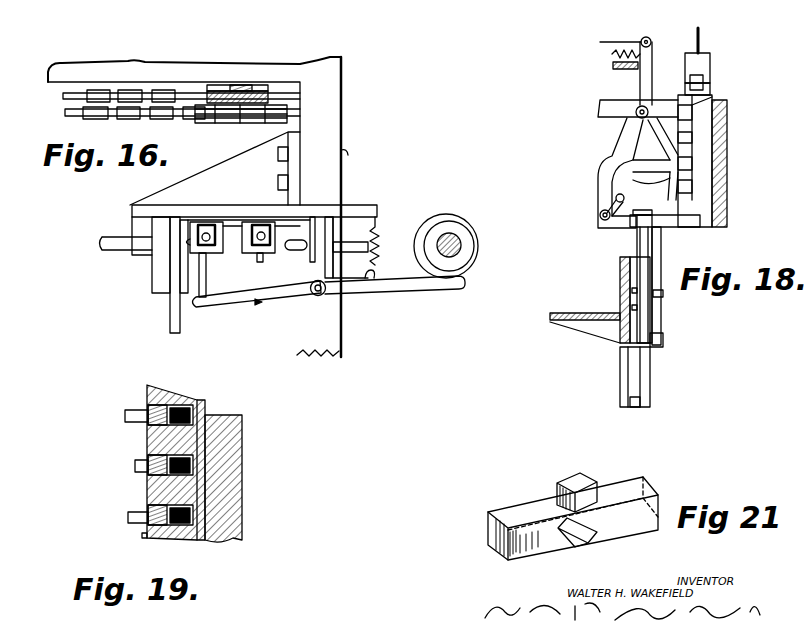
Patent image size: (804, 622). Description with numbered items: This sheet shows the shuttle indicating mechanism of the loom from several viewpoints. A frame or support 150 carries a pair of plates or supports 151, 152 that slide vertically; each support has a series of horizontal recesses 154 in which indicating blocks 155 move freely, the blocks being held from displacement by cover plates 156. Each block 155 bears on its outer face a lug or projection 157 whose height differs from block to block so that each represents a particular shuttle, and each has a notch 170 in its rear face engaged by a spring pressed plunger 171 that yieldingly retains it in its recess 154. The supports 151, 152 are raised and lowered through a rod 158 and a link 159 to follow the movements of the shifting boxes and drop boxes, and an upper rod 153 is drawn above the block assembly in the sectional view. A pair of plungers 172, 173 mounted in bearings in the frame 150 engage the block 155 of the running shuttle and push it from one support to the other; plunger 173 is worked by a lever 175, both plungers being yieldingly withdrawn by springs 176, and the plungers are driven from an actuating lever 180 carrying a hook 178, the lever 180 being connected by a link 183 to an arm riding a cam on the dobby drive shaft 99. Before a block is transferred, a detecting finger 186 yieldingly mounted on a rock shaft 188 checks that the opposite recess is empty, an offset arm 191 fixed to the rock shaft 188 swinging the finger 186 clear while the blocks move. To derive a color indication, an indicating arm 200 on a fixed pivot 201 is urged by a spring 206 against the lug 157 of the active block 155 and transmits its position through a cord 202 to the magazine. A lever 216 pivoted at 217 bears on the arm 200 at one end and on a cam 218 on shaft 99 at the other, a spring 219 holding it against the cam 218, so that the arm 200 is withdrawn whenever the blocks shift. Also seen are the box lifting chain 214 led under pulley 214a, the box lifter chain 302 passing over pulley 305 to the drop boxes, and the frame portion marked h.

In FIG. 16, the dobby drive shaft 99 is at (460, 255).
In FIG. 16, the frame 150 is at (254, 211).
In FIG. 18, the frame 150 is at (727, 112).
In FIG. 19, the frame 150 is at (237, 432).
In FIG. 16, the support 151 is at (267, 222).
In FIG. 18, the support 151 is at (703, 137).
In FIG. 19, the support 151 is at (207, 400).
In FIG. 16, the support 152 is at (220, 218).
In FIG. 18, the rod 153 is at (702, 40).
In FIG. 18, the horizontal recess 154 is at (694, 107).
In FIG. 19, the horizontal recess 154 is at (166, 402).
In FIG. 16, the indicating block 155 is at (225, 253).
In FIG. 18, the indicating block 155 is at (692, 163).
In FIG. 19, the indicating block 155 is at (147, 405).
In FIG. 21, the indicating block 155 is at (488, 513).
In FIG. 18, the cover plate 156 is at (678, 98).
In FIG. 19, the cover plate 156 is at (147, 485).
In FIG. 16, the lug 157 is at (262, 262).
In FIG. 19, the lug 157 is at (138, 463).
In FIG. 21, the lug 157 is at (578, 477).
In FIG. 16, the rod 158 is at (262, 222).
In FIG. 16, the link 159 is at (202, 222).
In FIG. 21, the notch 170 is at (580, 540).
In FIG. 19, the spring pressed plunger 171 is at (185, 400).
In FIG. 16, the plunger 172 is at (348, 250).
In FIG. 16, the plunger 173 is at (112, 237).
In FIG. 18, the lever 175 is at (662, 238).
In FIG. 18, the spring 176 is at (641, 404).
In FIG. 18, the hook 178 is at (632, 300).
In FIG. 18, the actuating lever 180 is at (636, 246).
In FIG. 18, the link 183 is at (660, 298).
In FIG. 18, the detecting finger 186 is at (600, 187).
In FIG. 18, the rock shaft 188 is at (600, 216).
In FIG. 18, the offset arm 191 is at (624, 198).
In FIG. 16, the indicating arm 200 is at (208, 286).
In FIG. 18, the indicating arm 200 is at (640, 86).
In FIG. 18, the fixed pivot 201 is at (630, 117).
In FIG. 18, the cord 202 is at (624, 42).
In FIG. 18, the spring 206 is at (612, 53).
In FIG. 16, the box lifting chain 214 is at (68, 92).
In FIG. 16, the pulley 214a is at (253, 85).
In FIG. 16, the lever 216 is at (412, 287).
In FIG. 18, the lever 216 is at (613, 65).
In FIG. 16, the pivot 217 is at (332, 293).
In FIG. 16, the cam 218 is at (468, 229).
In FIG. 16, the spring 219 is at (375, 262).
In FIG. 16, the box lifter chain 302 is at (132, 117).
In FIG. 16, the pulley 305 is at (241, 126).
In FIG. 16, the frame h is at (350, 158).